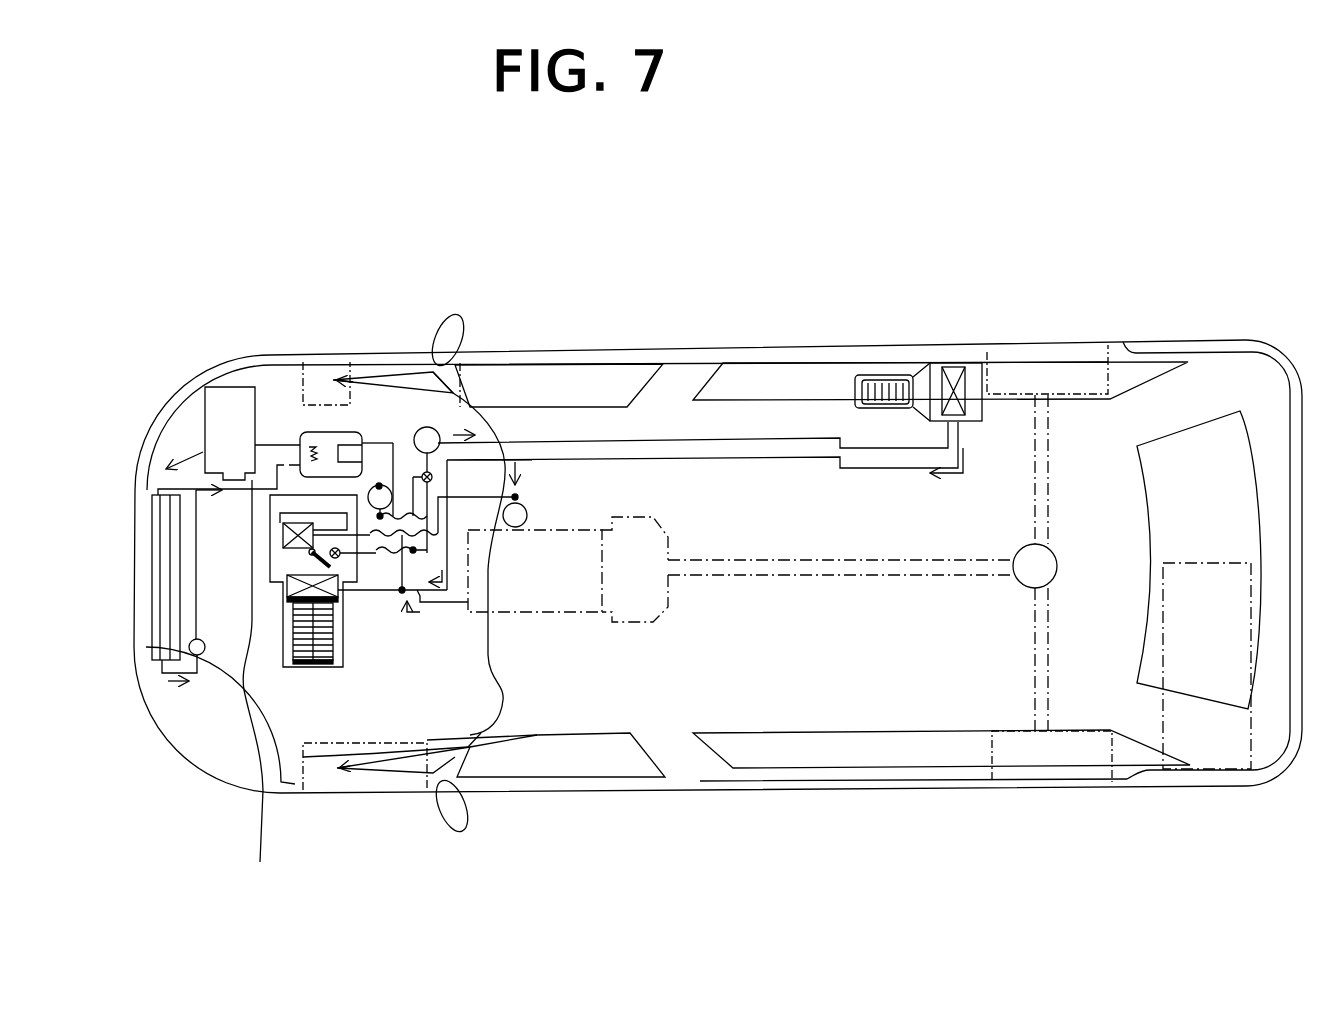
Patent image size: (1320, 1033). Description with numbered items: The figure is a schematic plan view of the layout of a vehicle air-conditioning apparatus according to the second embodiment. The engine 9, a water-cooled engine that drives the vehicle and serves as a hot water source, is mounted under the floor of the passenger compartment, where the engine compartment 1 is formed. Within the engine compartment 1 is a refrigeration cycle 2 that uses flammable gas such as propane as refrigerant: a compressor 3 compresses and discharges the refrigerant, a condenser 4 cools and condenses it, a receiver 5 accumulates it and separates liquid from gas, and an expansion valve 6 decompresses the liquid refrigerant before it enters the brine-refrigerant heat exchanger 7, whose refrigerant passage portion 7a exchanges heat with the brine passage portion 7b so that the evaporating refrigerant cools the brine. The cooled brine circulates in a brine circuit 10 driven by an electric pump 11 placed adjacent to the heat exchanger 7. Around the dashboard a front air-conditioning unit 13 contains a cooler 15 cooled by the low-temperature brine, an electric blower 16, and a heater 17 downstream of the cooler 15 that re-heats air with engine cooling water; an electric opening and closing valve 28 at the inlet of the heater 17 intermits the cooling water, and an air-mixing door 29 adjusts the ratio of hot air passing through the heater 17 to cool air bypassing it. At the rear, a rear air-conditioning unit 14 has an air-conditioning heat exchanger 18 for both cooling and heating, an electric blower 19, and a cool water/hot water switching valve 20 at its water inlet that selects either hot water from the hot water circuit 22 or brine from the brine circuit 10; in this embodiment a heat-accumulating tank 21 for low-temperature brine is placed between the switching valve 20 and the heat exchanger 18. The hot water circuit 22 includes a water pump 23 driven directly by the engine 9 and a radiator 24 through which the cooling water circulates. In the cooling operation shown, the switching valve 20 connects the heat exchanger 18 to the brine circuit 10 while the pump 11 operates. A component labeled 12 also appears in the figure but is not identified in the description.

The engine compartment 1 is at (404, 692).
The refrigeration cycle 2 is at (220, 427).
The compressor 3 is at (186, 441).
The condenser 4 is at (152, 573).
The receiver 5 is at (200, 655).
The expansion valve 6 is at (254, 387).
The brine-refrigerant heat exchanger 7 is at (312, 359).
The refrigerant passage portion 7a is at (262, 497).
The brine passage portion 7b is at (348, 440).
The engine 9 is at (562, 613).
The brine circuit 10 is at (382, 606).
The electric pump 11 is at (377, 484).
The rear seat 12 is at (845, 665).
The front air-conditioning unit 13 is at (260, 577).
The rear air-conditioning unit 14 is at (876, 315).
The cooler 15 is at (300, 665).
The blower 16 is at (258, 689).
The heater 17 is at (283, 532).
The air-conditioning heat exchanger 18 is at (948, 363).
The blower 19 is at (893, 387).
The cool water/hot water switching valve 20 is at (423, 471).
The heat-accumulating tank 21 is at (439, 433).
The hot water circuit 22 is at (455, 622).
The water pump 23 is at (534, 460).
The radiator 24 is at (188, 645).
The opening and closing valve 28 is at (340, 556).
The air-mixing door 29 is at (330, 553).